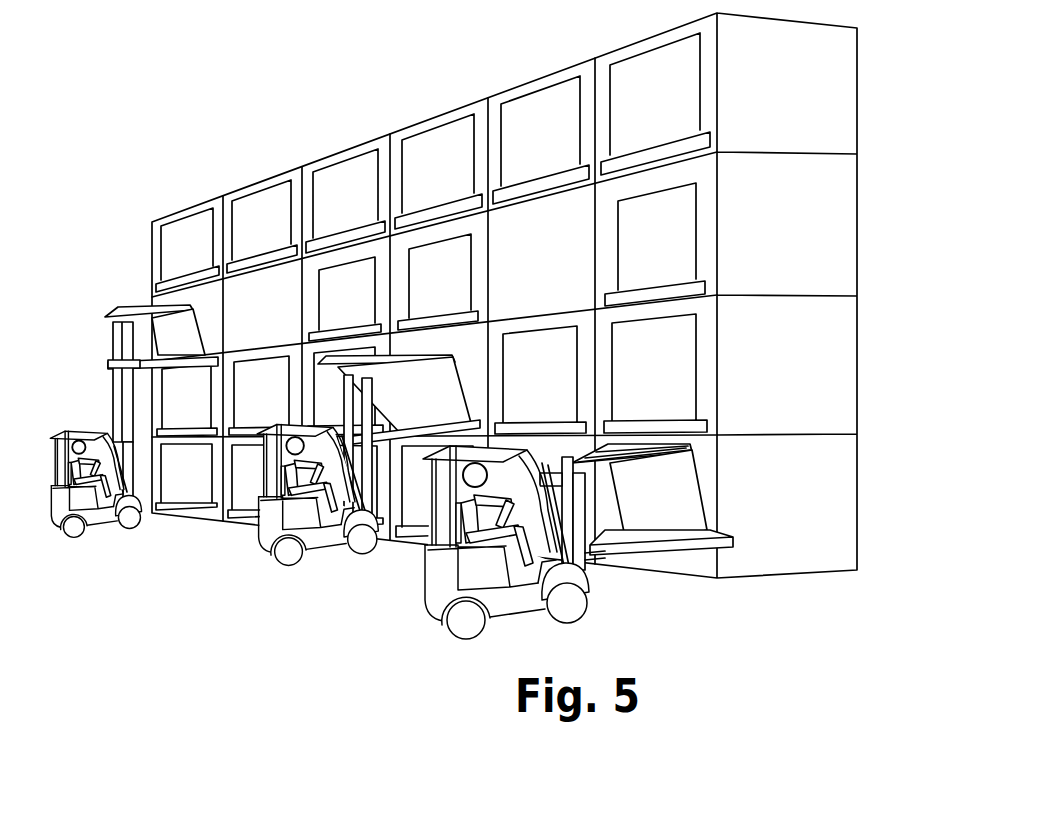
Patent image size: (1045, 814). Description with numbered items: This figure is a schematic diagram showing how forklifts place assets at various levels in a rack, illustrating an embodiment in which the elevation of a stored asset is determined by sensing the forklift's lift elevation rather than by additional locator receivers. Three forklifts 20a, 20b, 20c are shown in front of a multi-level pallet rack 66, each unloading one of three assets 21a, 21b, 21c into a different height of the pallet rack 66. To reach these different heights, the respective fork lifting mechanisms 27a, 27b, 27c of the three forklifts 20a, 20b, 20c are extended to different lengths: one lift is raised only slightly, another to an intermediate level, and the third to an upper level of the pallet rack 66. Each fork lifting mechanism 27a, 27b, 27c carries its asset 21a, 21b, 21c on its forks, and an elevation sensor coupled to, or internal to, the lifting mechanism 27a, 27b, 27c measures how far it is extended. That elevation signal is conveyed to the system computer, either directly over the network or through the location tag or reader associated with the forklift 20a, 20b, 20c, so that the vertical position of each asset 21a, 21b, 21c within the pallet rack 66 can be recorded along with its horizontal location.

The pallet rack 66 is at (300, 169).
The forklift 20a is at (426, 606).
The forklift 20b is at (293, 561).
The forklift 20c is at (84, 533).
The asset 21a is at (707, 491).
The asset 21b is at (463, 385).
The asset 21c is at (151, 306).
The fork lifting mechanism 27a is at (595, 562).
The fork lifting mechanism 27b is at (350, 408).
The fork lifting mechanism 27c is at (118, 393).